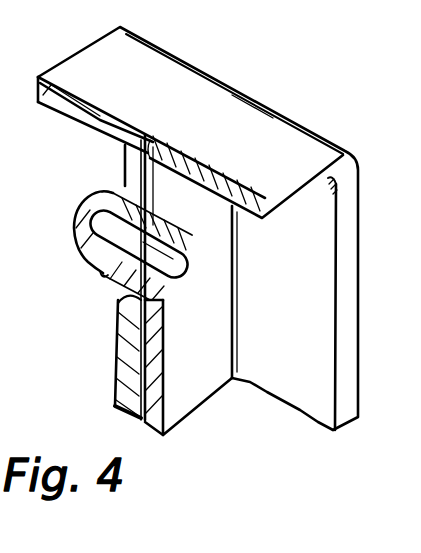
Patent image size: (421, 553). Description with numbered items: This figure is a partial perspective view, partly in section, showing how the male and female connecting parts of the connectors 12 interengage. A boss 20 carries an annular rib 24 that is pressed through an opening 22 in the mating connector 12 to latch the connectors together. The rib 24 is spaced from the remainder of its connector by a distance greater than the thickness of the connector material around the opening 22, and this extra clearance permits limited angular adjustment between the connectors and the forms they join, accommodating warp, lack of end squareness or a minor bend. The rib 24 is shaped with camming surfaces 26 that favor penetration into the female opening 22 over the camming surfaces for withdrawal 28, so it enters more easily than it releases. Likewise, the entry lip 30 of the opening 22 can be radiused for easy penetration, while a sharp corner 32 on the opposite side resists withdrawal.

The connector 12 is at (170, 88).
The boss 20 is at (74, 236).
The opening 22 is at (173, 238).
The annular rib 24 is at (103, 278).
The camming surfaces for penetration 26 is at (113, 190).
The camming surfaces for withdrawal 28 is at (197, 163).
The entry lip 30 is at (173, 293).
The sharp corner 32 is at (118, 298).